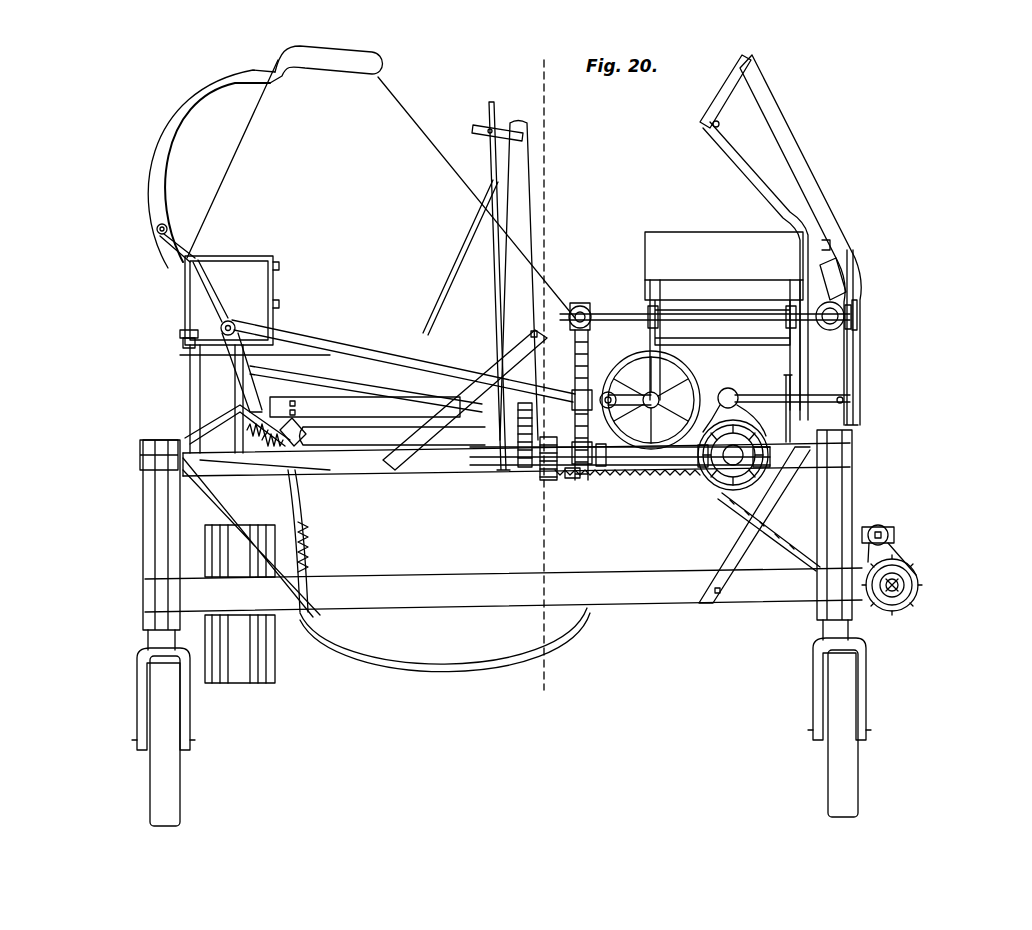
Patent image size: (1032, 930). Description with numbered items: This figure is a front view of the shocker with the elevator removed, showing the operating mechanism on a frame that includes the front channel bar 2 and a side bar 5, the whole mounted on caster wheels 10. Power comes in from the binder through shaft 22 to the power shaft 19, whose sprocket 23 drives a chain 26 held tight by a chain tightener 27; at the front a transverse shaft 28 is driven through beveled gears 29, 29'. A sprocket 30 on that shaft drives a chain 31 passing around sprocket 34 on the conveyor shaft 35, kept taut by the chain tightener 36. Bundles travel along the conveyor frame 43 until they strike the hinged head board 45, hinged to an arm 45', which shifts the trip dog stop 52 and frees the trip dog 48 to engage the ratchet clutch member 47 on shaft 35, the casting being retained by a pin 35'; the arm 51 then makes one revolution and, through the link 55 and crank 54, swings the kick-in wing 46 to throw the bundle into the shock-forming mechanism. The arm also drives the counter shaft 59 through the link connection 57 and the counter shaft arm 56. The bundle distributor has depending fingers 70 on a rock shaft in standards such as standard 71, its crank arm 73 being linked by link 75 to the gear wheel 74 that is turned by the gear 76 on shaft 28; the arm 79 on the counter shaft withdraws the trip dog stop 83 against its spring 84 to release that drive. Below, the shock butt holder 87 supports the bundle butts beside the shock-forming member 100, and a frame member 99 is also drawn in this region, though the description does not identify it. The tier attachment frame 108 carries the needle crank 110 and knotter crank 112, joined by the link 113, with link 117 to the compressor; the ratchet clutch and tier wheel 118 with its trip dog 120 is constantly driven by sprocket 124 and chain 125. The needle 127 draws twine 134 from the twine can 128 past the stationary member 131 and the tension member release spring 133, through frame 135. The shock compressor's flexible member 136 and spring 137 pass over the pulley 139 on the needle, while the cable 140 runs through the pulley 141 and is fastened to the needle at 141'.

The front channel bar 2 is at (447, 462).
The side bar 5 is at (272, 465).
The caster wheel 10 is at (180, 772).
The power shaft 19 is at (915, 585).
The shaft 22 is at (556, 83).
The sprocket 23 is at (908, 592).
The chain 26 is at (895, 560).
The chain tightener 27 is at (890, 528).
The transverse shaft 28 is at (658, 470).
The beveled gear 29 is at (718, 478).
The beveled gear 29' is at (756, 452).
The sprocket 30 is at (575, 475).
The chain 31 is at (578, 372).
The sprocket 34 is at (593, 313).
The conveyor shaft 35 is at (705, 312).
The pin 35' is at (887, 313).
The chain tightener 36 is at (596, 430).
The conveyor frame 43 is at (658, 291).
The hinged head board 45 is at (703, 288).
The arm 45' is at (852, 231).
The kick-in wing 46 is at (740, 200).
The ratchet clutch member 47 is at (852, 326).
The trip dog 48 is at (300, 448).
The arm 51 is at (848, 308).
The trip dog stop 52 is at (830, 280).
The crank 54 is at (740, 90).
The link 55 is at (812, 160).
The counter shaft arm 56 is at (842, 402).
The link connection 57 is at (858, 362).
The counter shaft 59 is at (775, 400).
The depending fingers 70 is at (458, 247).
The standard 71 is at (512, 118).
The crank arm 73 is at (470, 130).
The gear wheel 74 is at (465, 470).
The link 75 is at (492, 150).
The gear 76 is at (520, 470).
The arm 79 is at (786, 420).
The trip dog stop 83 is at (526, 468).
The spring 84 is at (600, 475).
The shock butt holder 87 is at (418, 640).
The channel 99 is at (378, 455).
The shock-forming member 100 is at (285, 507).
The tier attachment frame 108 is at (330, 418).
The crank 110 is at (200, 350).
The crank 112 is at (690, 378).
The link 113 is at (278, 336).
The link 117 is at (280, 378).
The ratchet clutch and tier wheel 118 is at (700, 397).
The trip dog 120 is at (732, 402).
The sprocket 124 is at (720, 505).
The chain 125 is at (703, 477).
The needle 127 is at (158, 150).
The twine can 128 is at (275, 656).
The stationary member 131 is at (140, 470).
The tension member release spring 133 is at (205, 440).
The twine 134 is at (252, 122).
The frame 135 is at (272, 252).
The flexible member 136 is at (205, 290).
The spring 137 is at (295, 545).
The pulley 139 is at (158, 232).
The cable 140 is at (185, 325).
The pulley 141 is at (164, 327).
The fastening point 141' is at (240, 312).